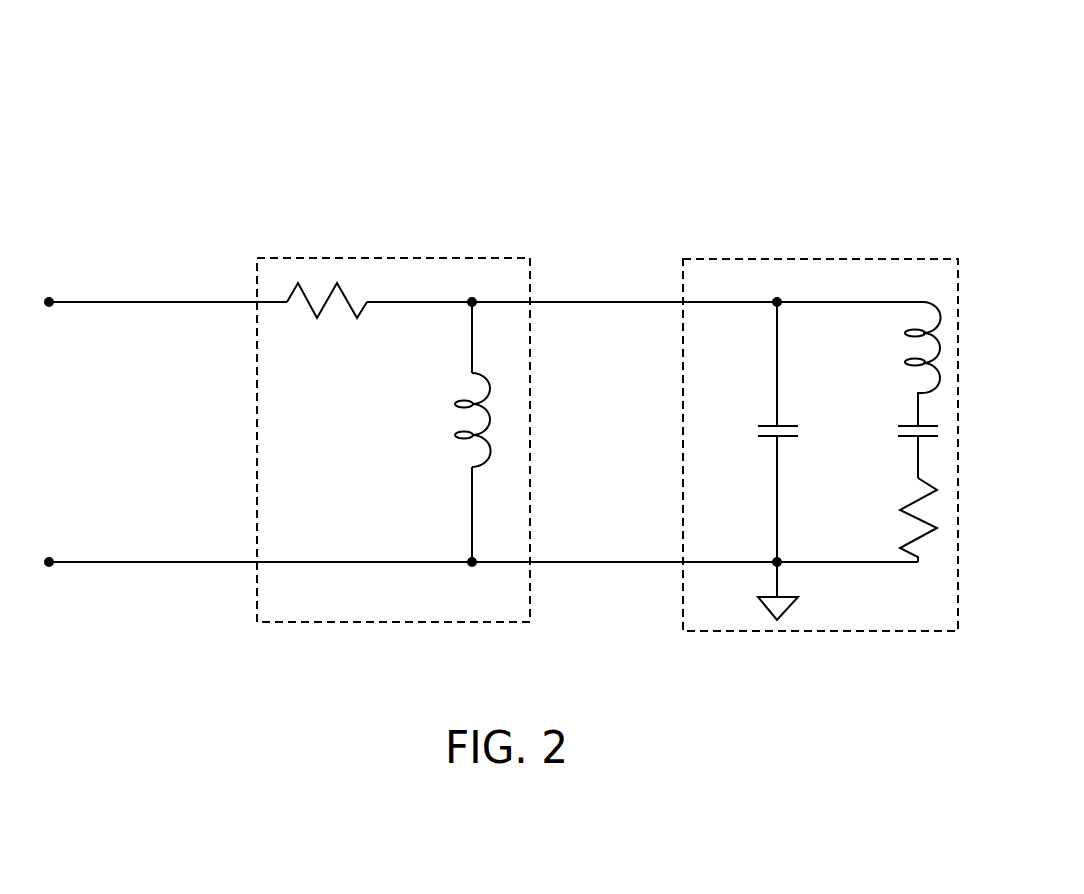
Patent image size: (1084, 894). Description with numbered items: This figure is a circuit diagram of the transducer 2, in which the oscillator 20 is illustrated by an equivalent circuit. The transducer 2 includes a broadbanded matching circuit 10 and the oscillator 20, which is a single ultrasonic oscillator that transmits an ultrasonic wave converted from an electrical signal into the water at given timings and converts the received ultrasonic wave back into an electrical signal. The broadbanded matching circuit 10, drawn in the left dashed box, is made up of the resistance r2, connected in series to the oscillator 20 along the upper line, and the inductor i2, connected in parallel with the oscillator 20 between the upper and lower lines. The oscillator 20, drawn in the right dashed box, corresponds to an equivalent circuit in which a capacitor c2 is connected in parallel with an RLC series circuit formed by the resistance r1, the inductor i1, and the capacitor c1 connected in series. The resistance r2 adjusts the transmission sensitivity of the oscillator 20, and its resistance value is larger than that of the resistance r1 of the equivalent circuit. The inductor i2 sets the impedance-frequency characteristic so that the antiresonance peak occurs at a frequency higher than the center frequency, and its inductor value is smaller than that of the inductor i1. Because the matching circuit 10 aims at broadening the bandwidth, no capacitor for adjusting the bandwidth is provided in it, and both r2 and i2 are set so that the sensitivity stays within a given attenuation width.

The transducer 2 is at (759, 153).
The broadbanded matching circuit 10 is at (413, 258).
The oscillator 20 is at (697, 259).
The resistance r2 is at (345, 304).
The inductor i2 is at (458, 407).
The capacitor c2 is at (767, 421).
The inductor i1 is at (905, 338).
The capacitor c1 is at (907, 421).
The resistance r1 is at (912, 498).